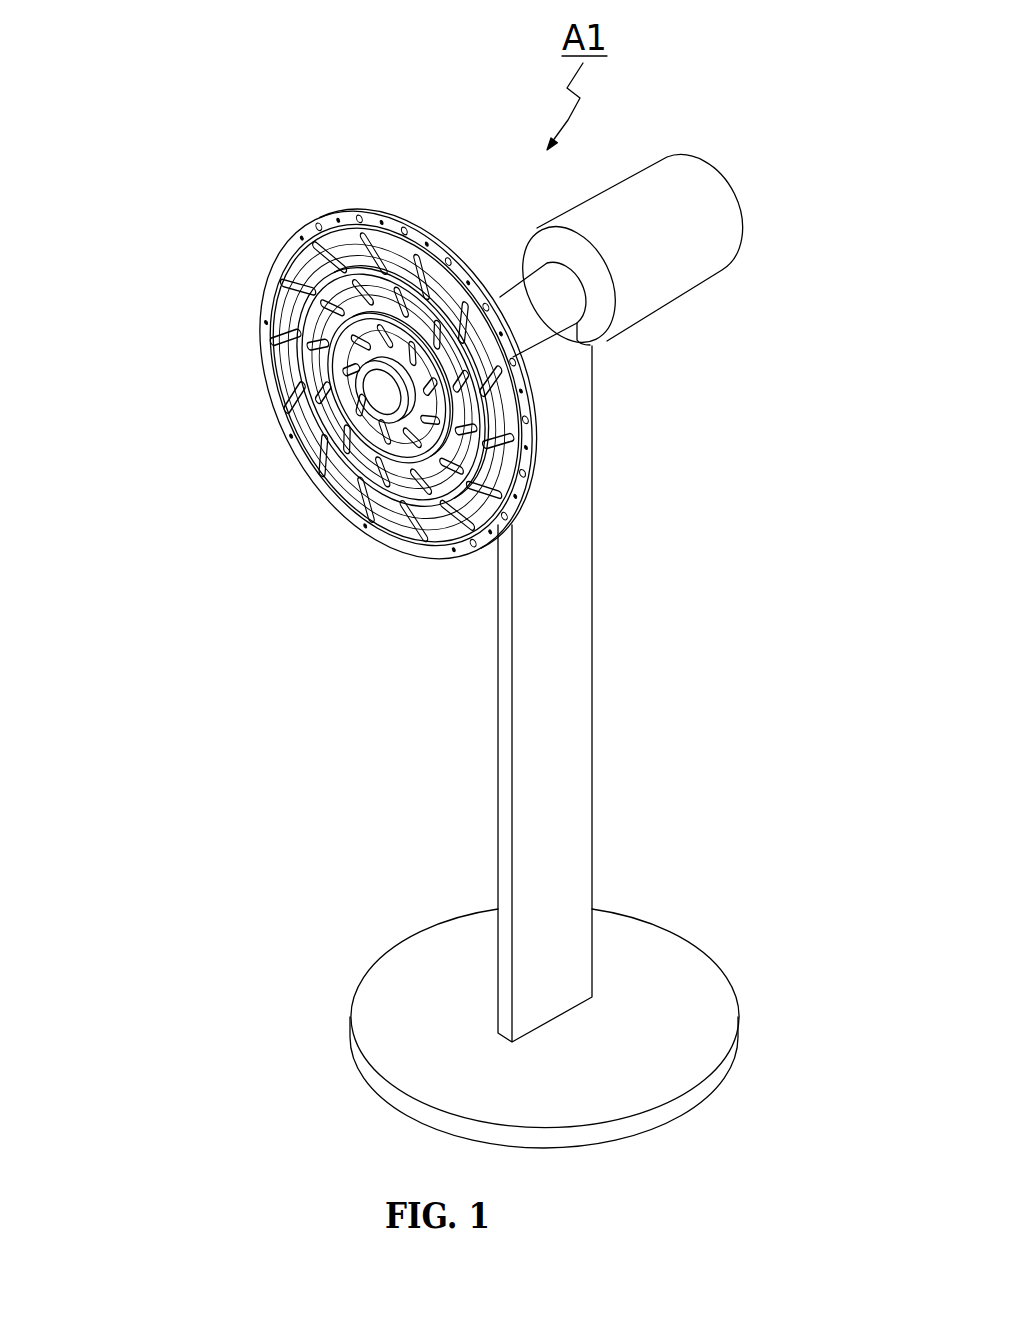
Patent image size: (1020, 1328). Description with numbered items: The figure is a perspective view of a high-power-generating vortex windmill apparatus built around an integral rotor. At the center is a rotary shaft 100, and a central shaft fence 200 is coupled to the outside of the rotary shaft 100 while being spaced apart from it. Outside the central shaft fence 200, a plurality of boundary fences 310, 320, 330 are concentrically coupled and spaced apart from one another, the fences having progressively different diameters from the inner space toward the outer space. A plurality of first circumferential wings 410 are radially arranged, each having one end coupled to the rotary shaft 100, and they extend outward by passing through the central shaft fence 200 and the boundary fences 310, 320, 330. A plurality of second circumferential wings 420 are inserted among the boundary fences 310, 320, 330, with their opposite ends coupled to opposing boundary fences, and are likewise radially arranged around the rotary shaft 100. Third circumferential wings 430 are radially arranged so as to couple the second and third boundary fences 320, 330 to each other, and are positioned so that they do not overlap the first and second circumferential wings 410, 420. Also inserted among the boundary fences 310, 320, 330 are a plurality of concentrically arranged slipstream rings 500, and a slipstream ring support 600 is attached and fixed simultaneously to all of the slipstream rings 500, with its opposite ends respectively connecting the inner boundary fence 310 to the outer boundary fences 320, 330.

The rotary shaft 100 is at (377, 402).
The central shaft fence 200 is at (513, 355).
The boundary fence 310 is at (315, 400).
The boundary fence 320 is at (300, 367).
The boundary fence 330 is at (263, 338).
The first circumferential wing 410 is at (347, 232).
The second circumferential wing 420 is at (293, 230).
The third circumferential wing 430 is at (385, 238).
The slipstream ring 500 is at (457, 553).
The slipstream ring support 600 is at (387, 513).